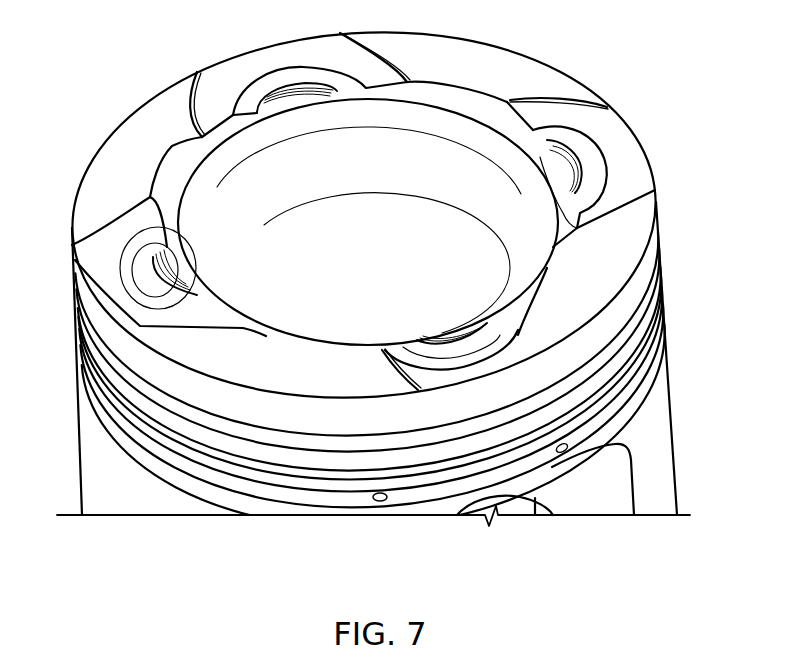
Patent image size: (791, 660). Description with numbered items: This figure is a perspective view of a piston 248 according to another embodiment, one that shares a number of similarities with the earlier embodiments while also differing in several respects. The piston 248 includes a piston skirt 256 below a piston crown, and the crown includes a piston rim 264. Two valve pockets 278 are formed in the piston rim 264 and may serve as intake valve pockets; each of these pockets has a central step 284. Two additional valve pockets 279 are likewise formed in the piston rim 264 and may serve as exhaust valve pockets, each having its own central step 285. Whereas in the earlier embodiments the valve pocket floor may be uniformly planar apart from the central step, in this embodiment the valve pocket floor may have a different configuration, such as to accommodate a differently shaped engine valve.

The piston 248 is at (724, 76).
The piston skirt 256 is at (660, 423).
The piston rim 264 is at (640, 210).
The valve pockets 278 is at (241, 76).
The valve pockets 279 is at (612, 132).
The central step 284 is at (313, 93).
The central step 285 is at (568, 158).